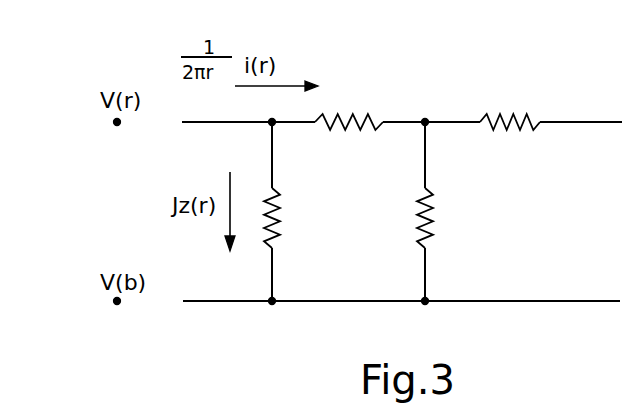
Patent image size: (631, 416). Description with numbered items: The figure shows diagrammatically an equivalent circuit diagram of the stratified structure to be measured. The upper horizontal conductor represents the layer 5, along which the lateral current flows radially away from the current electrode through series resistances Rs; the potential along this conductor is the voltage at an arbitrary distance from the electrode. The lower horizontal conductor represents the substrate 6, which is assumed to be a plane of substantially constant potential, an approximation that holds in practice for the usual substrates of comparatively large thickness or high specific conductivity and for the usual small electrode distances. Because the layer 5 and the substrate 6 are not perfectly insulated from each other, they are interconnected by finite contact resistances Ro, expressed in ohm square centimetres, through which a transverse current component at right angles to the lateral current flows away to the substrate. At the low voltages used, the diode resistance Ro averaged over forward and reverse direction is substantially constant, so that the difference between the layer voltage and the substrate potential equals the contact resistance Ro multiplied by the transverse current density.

The layer 5 is at (595, 122).
The substrate 6 is at (590, 301).
The series resistance Rs is at (352, 131).
The contact resistance Ro is at (282, 222).